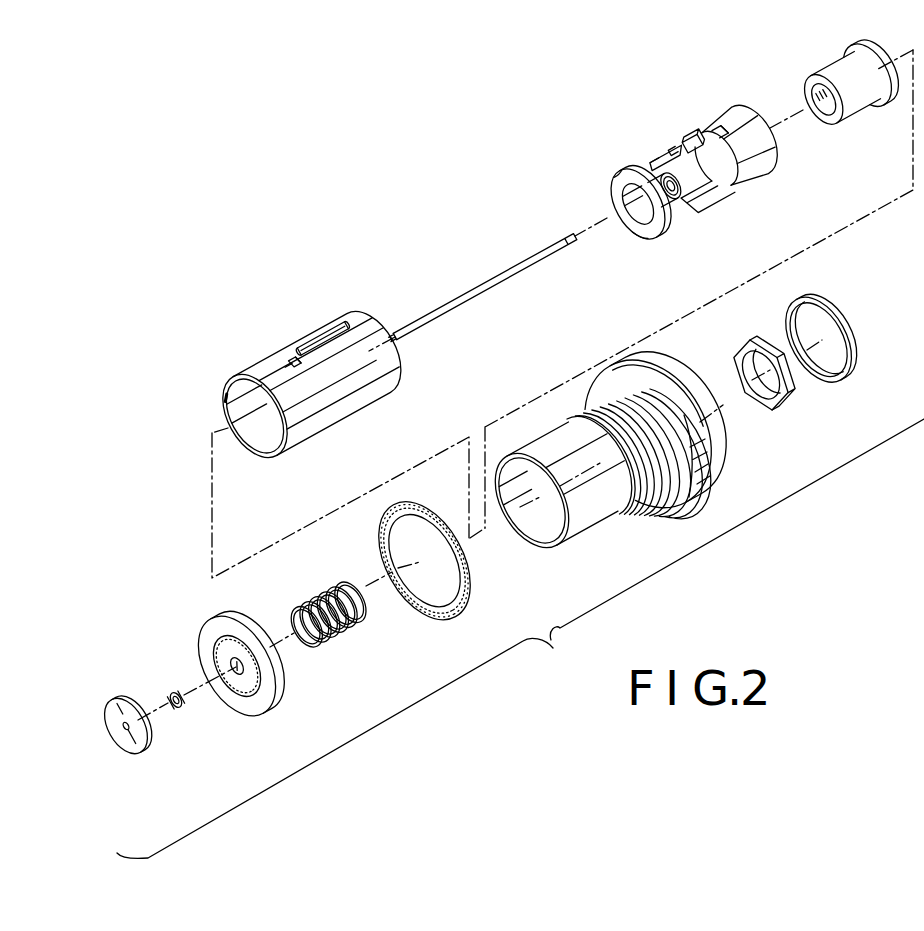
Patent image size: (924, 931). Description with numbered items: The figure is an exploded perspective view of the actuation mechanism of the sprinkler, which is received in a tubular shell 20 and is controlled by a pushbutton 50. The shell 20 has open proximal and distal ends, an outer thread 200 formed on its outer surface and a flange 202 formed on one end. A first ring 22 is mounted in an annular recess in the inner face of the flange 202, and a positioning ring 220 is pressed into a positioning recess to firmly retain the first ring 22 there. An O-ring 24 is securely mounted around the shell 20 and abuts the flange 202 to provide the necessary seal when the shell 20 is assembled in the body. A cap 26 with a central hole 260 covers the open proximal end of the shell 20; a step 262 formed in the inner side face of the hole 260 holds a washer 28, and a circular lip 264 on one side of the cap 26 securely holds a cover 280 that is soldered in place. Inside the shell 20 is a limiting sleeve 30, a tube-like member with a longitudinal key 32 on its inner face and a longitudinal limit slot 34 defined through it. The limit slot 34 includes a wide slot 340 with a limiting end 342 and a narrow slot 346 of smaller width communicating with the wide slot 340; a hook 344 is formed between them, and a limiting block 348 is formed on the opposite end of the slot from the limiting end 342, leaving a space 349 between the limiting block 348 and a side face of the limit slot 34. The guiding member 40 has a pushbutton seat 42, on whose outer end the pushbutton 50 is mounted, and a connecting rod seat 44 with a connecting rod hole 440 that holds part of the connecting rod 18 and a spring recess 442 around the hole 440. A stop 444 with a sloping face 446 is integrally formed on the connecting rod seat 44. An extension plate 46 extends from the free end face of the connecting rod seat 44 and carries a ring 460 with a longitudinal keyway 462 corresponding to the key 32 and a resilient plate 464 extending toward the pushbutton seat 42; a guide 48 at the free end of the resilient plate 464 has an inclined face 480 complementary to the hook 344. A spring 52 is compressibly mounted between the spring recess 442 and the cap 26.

The connecting rod 18 is at (501, 277).
The shell 20 is at (588, 525).
The outer thread 200 is at (652, 513).
The flange 202 is at (708, 477).
The first ring 22 is at (785, 402).
The positioning ring 220 is at (858, 351).
The O-ring 24 is at (448, 620).
The cap 26 is at (263, 700).
The central hole 260 is at (217, 663).
The step 262 is at (237, 675).
The circular lip 264 is at (215, 645).
The washer 28 is at (177, 710).
The cover 280 is at (132, 747).
The limiting sleeve 30 is at (248, 370).
The longitudinal key 32 is at (228, 393).
The longitudinal limit slot 34 is at (323, 337).
The wide slot 340 is at (333, 330).
The limiting end 342 is at (350, 327).
The hook 344 is at (303, 348).
The narrow slot 346 is at (295, 353).
The limiting block 348 is at (290, 360).
The space 349 is at (292, 367).
The guiding member 40 is at (677, 138).
The pushbutton seat 42 is at (733, 110).
The connecting rod seat 44 is at (723, 182).
The connecting rod hole 440 is at (680, 188).
The spring recess 442 is at (674, 191).
The stop 444 is at (693, 135).
The sloping face 446 is at (687, 137).
The extension plate 46 is at (655, 217).
The ring 460 is at (650, 237).
The longitudinal keyway 462 is at (612, 187).
The resilient plate 464 is at (647, 167).
The guide 48 is at (673, 145).
The inclined face 480 is at (672, 153).
The pushbutton 50 is at (869, 47).
The spring 52 is at (337, 630).